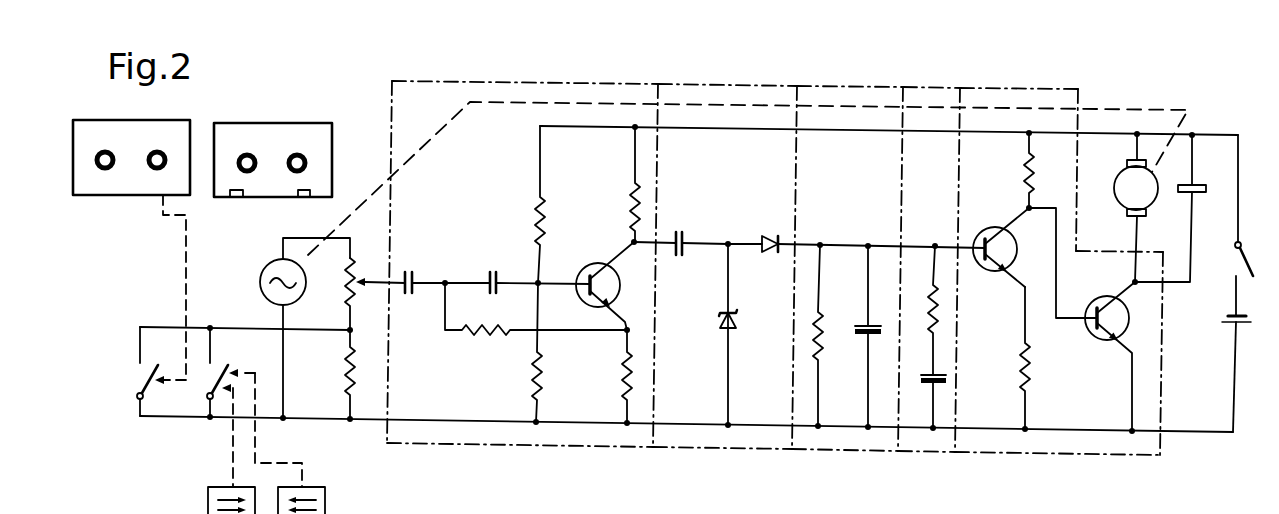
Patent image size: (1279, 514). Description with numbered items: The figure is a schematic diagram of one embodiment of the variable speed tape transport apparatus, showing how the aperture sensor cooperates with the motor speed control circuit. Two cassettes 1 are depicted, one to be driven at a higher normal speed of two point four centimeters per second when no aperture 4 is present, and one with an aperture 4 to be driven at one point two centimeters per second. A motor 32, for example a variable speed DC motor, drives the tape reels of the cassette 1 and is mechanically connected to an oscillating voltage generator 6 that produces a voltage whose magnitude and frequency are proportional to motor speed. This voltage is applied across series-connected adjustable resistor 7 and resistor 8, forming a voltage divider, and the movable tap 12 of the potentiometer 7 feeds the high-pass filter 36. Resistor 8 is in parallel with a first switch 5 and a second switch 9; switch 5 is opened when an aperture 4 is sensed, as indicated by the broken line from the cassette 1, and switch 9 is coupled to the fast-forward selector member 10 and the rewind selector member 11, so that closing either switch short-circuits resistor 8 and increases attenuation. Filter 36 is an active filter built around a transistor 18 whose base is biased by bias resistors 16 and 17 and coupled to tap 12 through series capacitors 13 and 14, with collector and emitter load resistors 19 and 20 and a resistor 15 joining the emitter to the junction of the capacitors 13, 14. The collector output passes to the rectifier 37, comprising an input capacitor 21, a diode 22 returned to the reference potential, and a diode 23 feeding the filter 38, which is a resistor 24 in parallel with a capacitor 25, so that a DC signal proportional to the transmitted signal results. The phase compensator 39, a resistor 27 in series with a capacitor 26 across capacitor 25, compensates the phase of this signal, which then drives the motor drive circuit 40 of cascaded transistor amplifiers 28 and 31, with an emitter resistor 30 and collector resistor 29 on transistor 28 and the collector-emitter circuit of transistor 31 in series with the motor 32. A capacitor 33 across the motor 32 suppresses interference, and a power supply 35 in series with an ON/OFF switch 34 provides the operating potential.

The cassette 1 is at (168, 120).
The aperture 4 is at (234, 198).
The first switch 5 is at (148, 383).
The oscillating voltage generator 6 is at (260, 283).
The adjustable resistor 7 is at (347, 290).
The resistor 8 is at (347, 383).
The second switch 9 is at (216, 382).
The selector member 10 is at (213, 500).
The selector member 11 is at (323, 500).
The movable tap 12 is at (362, 280).
The capacitor 13 is at (407, 270).
The capacitor 14 is at (491, 271).
The resistor 15 is at (487, 334).
The bias resistor 16 is at (535, 222).
The bias resistor 17 is at (535, 373).
The transistor 18 is at (602, 262).
The collector load resistor 19 is at (630, 207).
The emitter load resistor 20 is at (620, 382).
The input capacitor 21 is at (680, 232).
The diode 22 is at (720, 320).
The diode 23 is at (771, 236).
The resistor 24 is at (823, 346).
The capacitor 25 is at (864, 320).
The capacitor 26 is at (926, 374).
The resistor 27 is at (929, 308).
The transistor amplifier 28 is at (993, 271).
The collector resistor 29 is at (1021, 176).
The emitter resistor 30 is at (1018, 370).
The transistor amplifier 31 is at (1100, 342).
The motor 32 is at (1115, 178).
The capacitor 33 is at (1196, 193).
The ON/OFF switch 34 is at (1240, 264).
The power supply 35 is at (1226, 328).
The high-pass filter 36 is at (470, 430).
The rectifier 37 is at (688, 440).
The filter 38 is at (842, 440).
The phase compensator 39 is at (920, 440).
The motor drive circuit 40 is at (1058, 445).